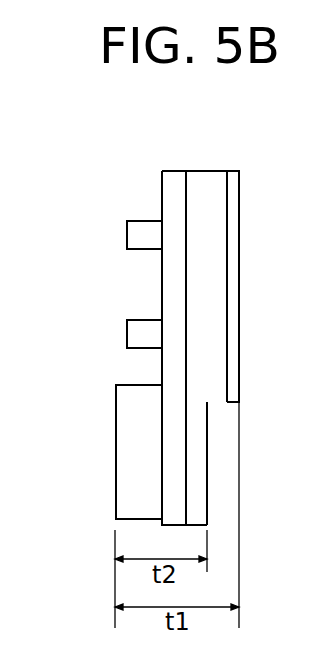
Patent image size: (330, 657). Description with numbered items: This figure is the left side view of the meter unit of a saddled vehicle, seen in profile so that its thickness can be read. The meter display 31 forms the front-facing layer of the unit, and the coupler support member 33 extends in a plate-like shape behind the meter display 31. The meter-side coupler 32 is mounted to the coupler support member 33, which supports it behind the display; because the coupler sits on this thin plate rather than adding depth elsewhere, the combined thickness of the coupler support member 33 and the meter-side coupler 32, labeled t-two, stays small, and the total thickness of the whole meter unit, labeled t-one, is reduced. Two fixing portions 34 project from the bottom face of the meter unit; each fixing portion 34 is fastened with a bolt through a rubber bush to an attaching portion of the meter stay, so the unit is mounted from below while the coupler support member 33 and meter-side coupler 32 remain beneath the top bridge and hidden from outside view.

The meter display 31 is at (239, 213).
The meter-side coupler 32 is at (118, 456).
The coupler support member 33 is at (207, 474).
The fixing portions 34 is at (126, 233).